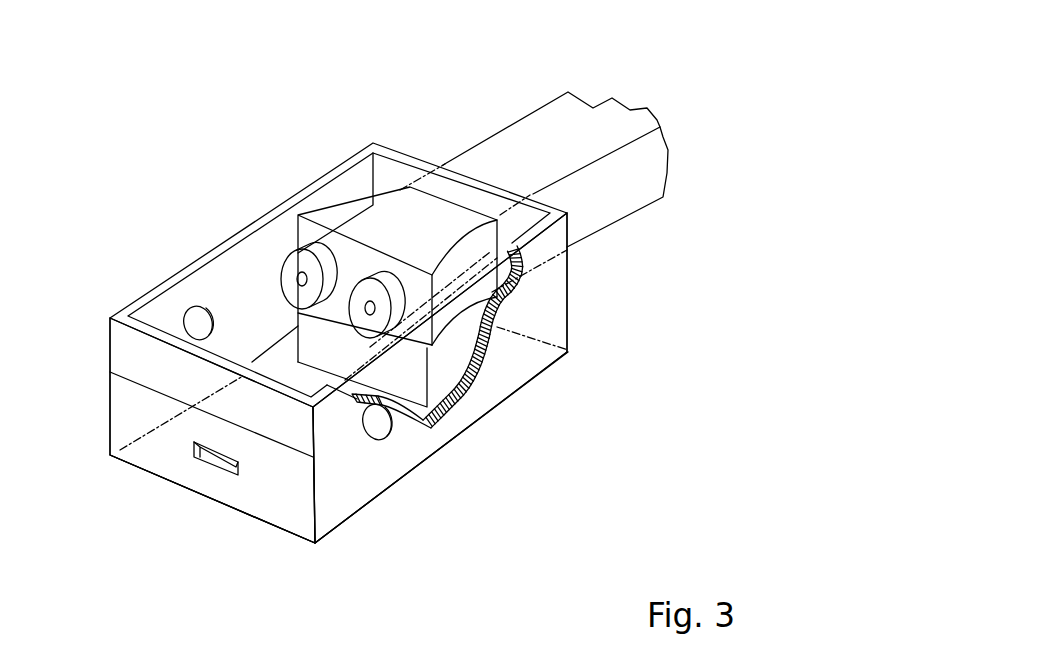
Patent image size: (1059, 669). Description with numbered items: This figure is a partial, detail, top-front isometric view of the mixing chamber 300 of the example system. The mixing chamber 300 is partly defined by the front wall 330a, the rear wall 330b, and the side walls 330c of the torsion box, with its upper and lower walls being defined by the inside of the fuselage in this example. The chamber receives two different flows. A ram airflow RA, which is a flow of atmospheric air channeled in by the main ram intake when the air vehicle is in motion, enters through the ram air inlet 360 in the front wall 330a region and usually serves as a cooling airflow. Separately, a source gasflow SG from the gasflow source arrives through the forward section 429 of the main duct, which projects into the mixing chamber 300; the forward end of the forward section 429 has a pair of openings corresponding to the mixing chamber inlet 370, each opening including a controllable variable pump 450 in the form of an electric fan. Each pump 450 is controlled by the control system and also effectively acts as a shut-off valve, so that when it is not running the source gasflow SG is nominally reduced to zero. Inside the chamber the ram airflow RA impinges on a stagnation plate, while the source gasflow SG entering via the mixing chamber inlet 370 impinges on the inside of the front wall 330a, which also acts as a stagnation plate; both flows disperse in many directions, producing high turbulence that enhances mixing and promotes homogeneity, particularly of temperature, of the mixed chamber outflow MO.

The mixing chamber 300 is at (181, 252).
The front wall 330a is at (305, 530).
The rear wall 330b is at (570, 297).
The side walls 330c is at (148, 293).
The ram air inlet 360 is at (233, 478).
The mixing chamber inlet 370 is at (298, 265).
The forward section 429 is at (495, 162).
The controllable variable pump 450 is at (378, 272).
The source gasflow SG is at (668, 73).
The mixed chamber outflow MO is at (380, 423).
The ram airflow RA is at (175, 506).